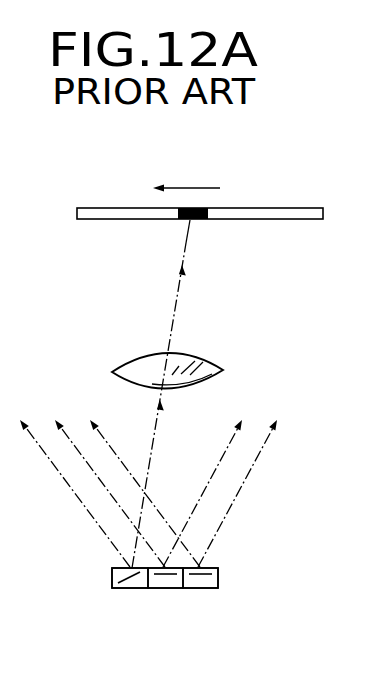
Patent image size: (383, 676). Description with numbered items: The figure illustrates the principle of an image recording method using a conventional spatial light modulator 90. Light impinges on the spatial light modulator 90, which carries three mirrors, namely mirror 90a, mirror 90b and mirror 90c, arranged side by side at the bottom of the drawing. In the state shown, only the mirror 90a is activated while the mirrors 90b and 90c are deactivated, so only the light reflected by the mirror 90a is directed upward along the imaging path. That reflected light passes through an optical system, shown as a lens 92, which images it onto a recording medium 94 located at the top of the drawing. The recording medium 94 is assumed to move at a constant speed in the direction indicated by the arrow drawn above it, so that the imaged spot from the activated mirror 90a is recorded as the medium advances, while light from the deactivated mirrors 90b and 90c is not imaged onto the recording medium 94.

The recording medium 94 is at (90, 210).
The lens 92 is at (137, 368).
The spatial light modulator 90 is at (154, 612).
The mirror 90a is at (140, 590).
The mirror 90b is at (165, 590).
The mirror 90c is at (205, 590).